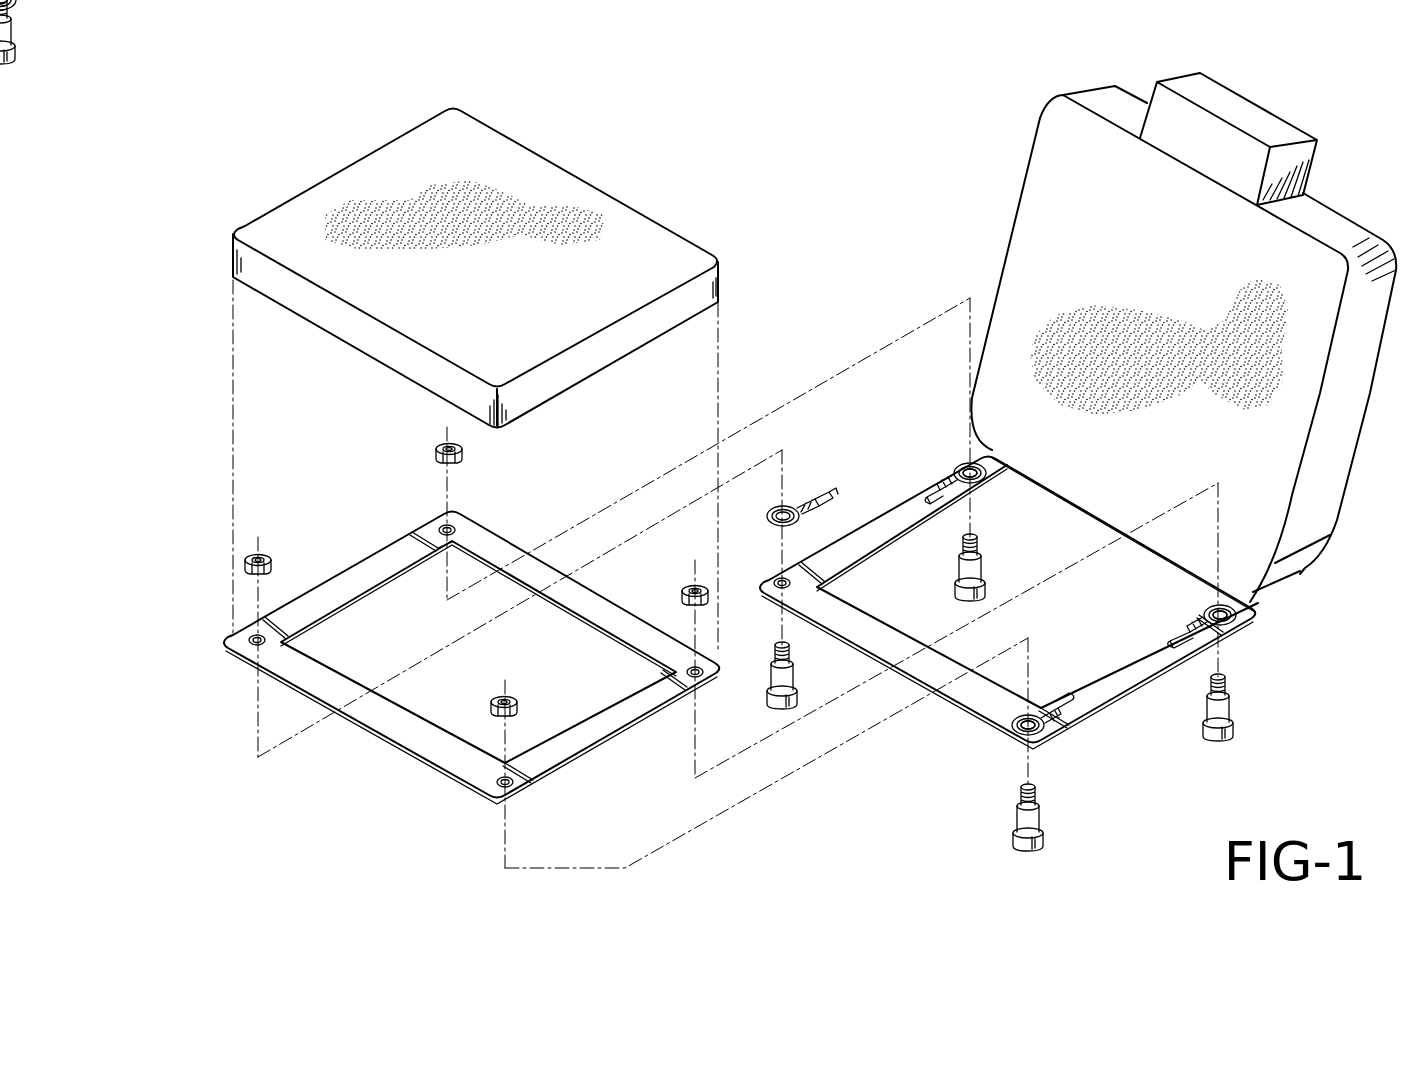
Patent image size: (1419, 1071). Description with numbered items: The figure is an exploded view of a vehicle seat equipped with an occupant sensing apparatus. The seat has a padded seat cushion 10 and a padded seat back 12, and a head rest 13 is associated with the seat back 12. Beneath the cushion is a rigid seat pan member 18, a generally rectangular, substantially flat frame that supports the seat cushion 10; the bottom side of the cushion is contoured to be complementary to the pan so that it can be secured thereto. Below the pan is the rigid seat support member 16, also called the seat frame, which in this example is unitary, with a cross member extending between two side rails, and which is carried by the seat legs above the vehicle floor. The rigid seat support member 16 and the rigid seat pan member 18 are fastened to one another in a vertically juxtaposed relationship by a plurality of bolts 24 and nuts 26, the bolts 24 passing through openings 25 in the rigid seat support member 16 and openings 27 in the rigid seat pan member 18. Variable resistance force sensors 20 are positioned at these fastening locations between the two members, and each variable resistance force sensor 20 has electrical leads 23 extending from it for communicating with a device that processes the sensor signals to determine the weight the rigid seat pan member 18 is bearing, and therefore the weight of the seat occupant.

The seat cushion 10 is at (583, 191).
The seat back 12 is at (1048, 177).
The head rest 13 is at (1264, 128).
The rigid seat support member 16 is at (1118, 666).
The rigid seat pan member 18 is at (437, 757).
The variable resistance force sensor 20 is at (953, 473).
The electrical leads 23 is at (818, 497).
The bolts 24 is at (979, 564).
The openings 25 is at (967, 467).
The nuts 26 is at (437, 454).
The openings 27 is at (443, 526).